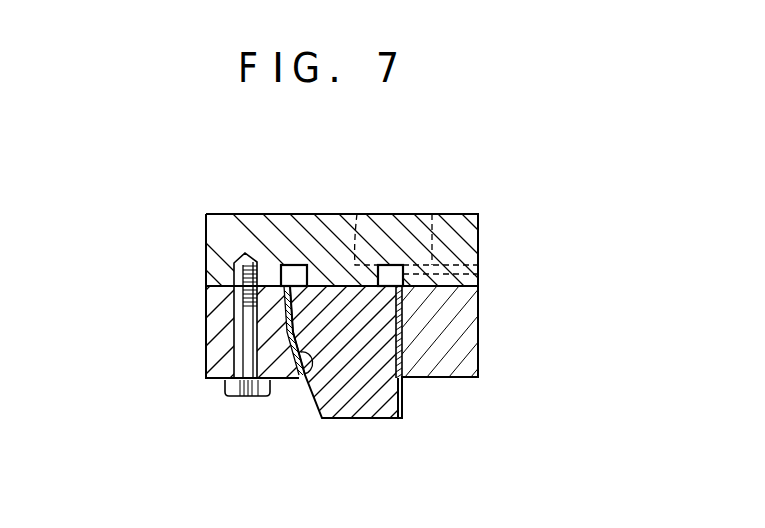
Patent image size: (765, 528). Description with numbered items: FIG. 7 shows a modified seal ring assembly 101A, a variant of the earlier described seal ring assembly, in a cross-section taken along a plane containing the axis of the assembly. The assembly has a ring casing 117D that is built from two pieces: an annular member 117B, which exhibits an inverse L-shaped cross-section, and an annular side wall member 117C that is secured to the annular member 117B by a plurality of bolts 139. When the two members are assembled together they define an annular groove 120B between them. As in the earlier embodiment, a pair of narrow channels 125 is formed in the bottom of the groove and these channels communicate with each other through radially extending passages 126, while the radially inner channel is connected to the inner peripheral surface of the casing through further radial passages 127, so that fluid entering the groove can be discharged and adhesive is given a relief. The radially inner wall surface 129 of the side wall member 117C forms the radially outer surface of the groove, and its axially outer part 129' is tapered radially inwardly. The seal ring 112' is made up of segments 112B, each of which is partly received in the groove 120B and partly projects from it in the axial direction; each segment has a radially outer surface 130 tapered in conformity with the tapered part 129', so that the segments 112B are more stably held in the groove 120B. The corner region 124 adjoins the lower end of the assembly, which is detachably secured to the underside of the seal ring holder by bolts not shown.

The modified seal ring assembly 101A is at (588, 244).
The annular member 117B is at (311, 214).
The annular side wall member 117C is at (206, 317).
The ring casing 117D is at (206, 284).
The annular groove 120B is at (360, 288).
The shoulder 124 is at (401, 382).
The narrow channels 125 is at (297, 265).
The passages 126 is at (364, 204).
The further passages 127 is at (428, 214).
The radially inner wall surface 129 is at (350, 331).
The tapered axially outer part 129' is at (281, 366).
The radially outer surface 130 is at (320, 412).
The bolts 139 is at (232, 397).
The seal ring 112' is at (442, 410).
The segments 112B is at (365, 398).